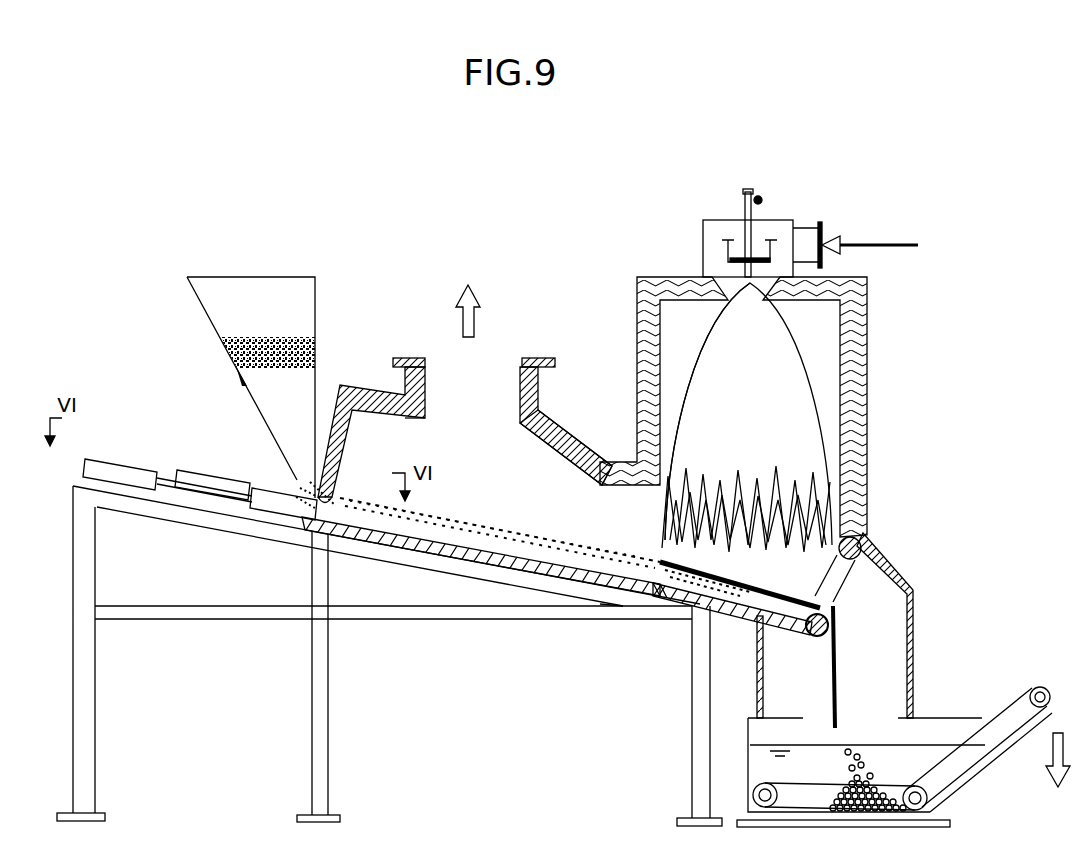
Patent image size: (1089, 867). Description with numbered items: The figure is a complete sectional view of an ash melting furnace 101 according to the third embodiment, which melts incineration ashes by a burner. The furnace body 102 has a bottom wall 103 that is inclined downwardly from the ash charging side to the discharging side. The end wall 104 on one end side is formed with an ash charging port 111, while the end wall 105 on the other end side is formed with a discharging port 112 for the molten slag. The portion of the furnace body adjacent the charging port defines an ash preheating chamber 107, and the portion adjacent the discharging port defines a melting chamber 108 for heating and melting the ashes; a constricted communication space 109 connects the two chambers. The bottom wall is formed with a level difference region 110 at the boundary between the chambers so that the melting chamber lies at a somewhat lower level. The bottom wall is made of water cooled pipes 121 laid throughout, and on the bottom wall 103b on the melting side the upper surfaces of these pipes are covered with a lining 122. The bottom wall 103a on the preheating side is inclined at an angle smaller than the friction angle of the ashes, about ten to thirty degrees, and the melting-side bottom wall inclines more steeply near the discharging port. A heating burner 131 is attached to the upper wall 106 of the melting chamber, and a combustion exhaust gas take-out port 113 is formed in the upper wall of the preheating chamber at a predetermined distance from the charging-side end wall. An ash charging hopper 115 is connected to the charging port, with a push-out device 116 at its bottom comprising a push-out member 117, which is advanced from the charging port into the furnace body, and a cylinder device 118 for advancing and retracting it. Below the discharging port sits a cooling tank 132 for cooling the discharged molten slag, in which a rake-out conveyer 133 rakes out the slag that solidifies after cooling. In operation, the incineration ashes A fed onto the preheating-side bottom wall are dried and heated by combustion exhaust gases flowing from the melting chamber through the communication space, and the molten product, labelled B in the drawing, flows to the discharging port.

The ash melting furnace 101 is at (690, 371).
The furnace body 102 is at (868, 456).
The bottom wall 103 is at (481, 597).
The water cooled pipes 121 is at (503, 567).
The bottom wall on the preheating side 103a is at (418, 548).
The bottom wall on the melting side 103b is at (723, 598).
The end wall 104 is at (323, 402).
The end wall 105 is at (866, 531).
The upper wall 106 is at (560, 428).
The ash preheating chamber 107 is at (470, 505).
The melting chamber 108 is at (752, 571).
The communication space 109 is at (610, 527).
The level difference region 110 is at (613, 617).
The ash charging port 111 is at (347, 497).
The discharging port 112 is at (837, 573).
The combustion exhaust gas take-out port 113 is at (520, 398).
The ash charging hopper 115 is at (318, 306).
The push-out device 116 is at (190, 462).
The push-out member 117 is at (270, 502).
The cylinder device 118 is at (110, 463).
The lining 122 is at (663, 590).
The heating burner 131 is at (766, 231).
The cooling tank 132 is at (950, 718).
The rake-out conveyer 133 is at (1015, 702).
The incineration ashes A is at (262, 340).
The molten product B is at (837, 628).